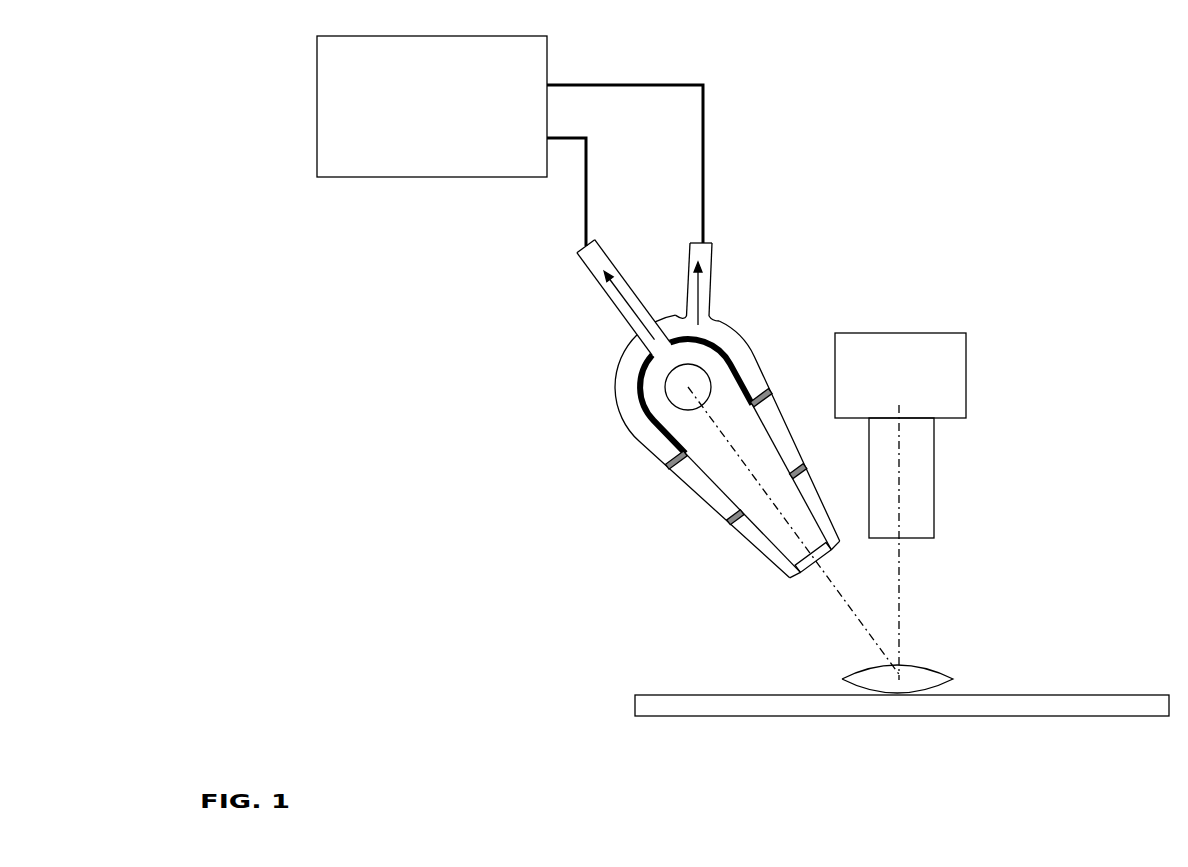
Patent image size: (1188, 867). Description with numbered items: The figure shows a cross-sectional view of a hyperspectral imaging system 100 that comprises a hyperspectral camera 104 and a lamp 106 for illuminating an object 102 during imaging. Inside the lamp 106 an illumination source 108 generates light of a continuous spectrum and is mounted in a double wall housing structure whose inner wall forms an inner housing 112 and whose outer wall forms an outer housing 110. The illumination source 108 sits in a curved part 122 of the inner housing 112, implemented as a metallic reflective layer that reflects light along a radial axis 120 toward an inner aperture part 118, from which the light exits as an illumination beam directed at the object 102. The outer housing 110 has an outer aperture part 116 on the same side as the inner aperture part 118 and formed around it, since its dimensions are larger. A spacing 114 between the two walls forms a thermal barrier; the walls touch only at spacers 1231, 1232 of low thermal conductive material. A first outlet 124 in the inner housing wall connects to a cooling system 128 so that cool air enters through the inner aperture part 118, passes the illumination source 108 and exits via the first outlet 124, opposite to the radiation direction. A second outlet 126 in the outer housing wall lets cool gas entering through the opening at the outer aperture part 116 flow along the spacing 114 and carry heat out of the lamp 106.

The hyperspectral imaging system 100 is at (1047, 290).
The object 102 is at (877, 682).
The hyperspectral camera 104 is at (900, 506).
The lamp 106 is at (482, 347).
The illumination source 108 is at (665, 380).
The outer housing 110 is at (618, 407).
The inner housing 112 is at (702, 475).
The spacing 114 is at (657, 440).
The outer aperture part 116 is at (793, 580).
The inner aperture part 118 is at (842, 558).
The radial axis 120 is at (842, 598).
The curved part 122 is at (717, 345).
The spacer 1231 is at (762, 395).
The spacer 1232 is at (800, 470).
The first outlet 124 is at (599, 297).
The second outlet 126 is at (713, 284).
The cooling system 128 is at (510, 141).